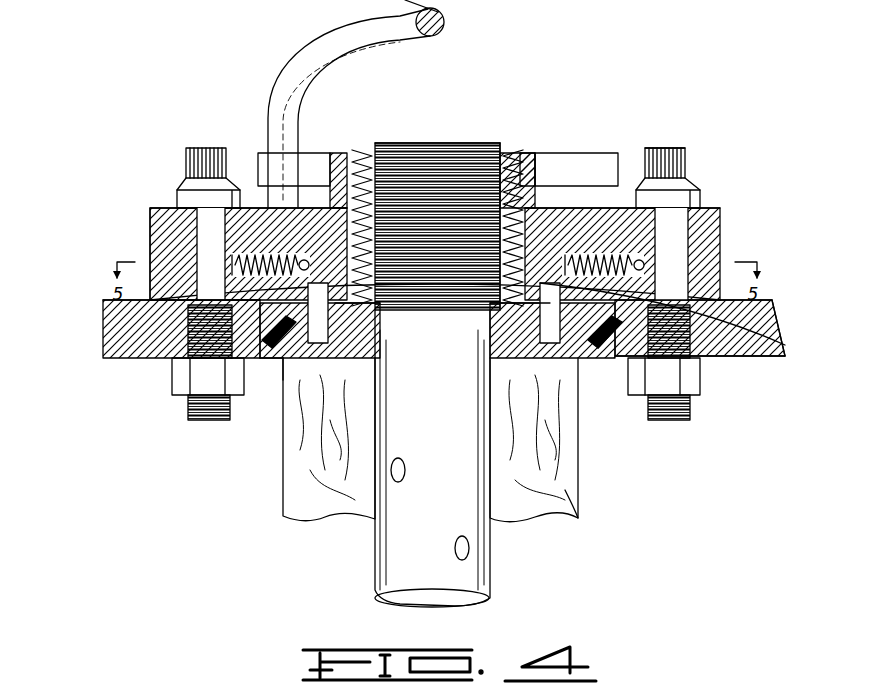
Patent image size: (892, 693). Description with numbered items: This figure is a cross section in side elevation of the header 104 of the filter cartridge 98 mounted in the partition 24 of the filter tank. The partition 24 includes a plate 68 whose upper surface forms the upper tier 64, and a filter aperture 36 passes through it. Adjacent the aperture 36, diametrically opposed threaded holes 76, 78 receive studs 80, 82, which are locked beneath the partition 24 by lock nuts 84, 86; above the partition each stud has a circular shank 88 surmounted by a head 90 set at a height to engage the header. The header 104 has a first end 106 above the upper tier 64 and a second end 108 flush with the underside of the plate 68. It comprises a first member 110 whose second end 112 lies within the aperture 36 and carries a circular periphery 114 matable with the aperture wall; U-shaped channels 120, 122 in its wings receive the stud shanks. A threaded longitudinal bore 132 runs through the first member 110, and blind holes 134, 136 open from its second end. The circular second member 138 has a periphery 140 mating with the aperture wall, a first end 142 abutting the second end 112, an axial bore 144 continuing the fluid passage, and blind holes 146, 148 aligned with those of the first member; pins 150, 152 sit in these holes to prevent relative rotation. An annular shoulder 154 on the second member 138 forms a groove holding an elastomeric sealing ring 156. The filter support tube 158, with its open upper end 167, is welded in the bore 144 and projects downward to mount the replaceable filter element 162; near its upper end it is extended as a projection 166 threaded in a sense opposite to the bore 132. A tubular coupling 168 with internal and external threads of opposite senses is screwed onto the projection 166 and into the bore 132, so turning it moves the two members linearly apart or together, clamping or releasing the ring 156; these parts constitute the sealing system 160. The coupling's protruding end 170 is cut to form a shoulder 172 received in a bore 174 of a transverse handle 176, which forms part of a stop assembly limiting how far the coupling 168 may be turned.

The partition 24 is at (800, 322).
The filter aperture 36 is at (260, 366).
The upper tier 64 is at (770, 300).
The plate 68 is at (104, 350).
The threaded hole 76 is at (180, 362).
The threaded hole 78 is at (780, 358).
The stud 80 is at (210, 146).
The stud 82 is at (690, 160).
The lock nut 84 is at (176, 396).
The lock nut 86 is at (698, 390).
The circular shank 88 is at (200, 215).
The head 90 is at (200, 186).
The cartridge 98 is at (603, 92).
The header 104 is at (245, 205).
The first end 106 is at (668, 147).
The second end 108 is at (270, 382).
The first member 110 is at (178, 220).
The second end 112 is at (372, 320).
The circular periphery 114 is at (232, 400).
The U-shaped channel 120 is at (190, 240).
The U-shaped channel 122 is at (680, 246).
The bore 132 is at (370, 150).
The blind hole 134 is at (115, 320).
The blind hole 136 is at (776, 340).
The second member 138 is at (578, 476).
The periphery 140 is at (655, 420).
The first end 142 is at (492, 323).
The axial bore 144 is at (380, 356).
The blind hole 146 is at (366, 376).
The blind hole 148 is at (495, 366).
The pin 150 is at (386, 340).
The pin 152 is at (490, 360).
The annular shoulder 154 is at (592, 362).
The elastomeric sealing ring 156 is at (614, 350).
The filter support tube 158 is at (476, 538).
The sealing system 160 is at (510, 152).
The filter element 162 is at (565, 510).
The projection 166 is at (458, 170).
The open upper end 167 is at (456, 150).
The tubular coupling 168 is at (345, 153).
The protruding end 170 is at (441, 146).
The shoulder 172 is at (530, 160).
The bore 174 is at (585, 168).
The handle 176 is at (615, 205).